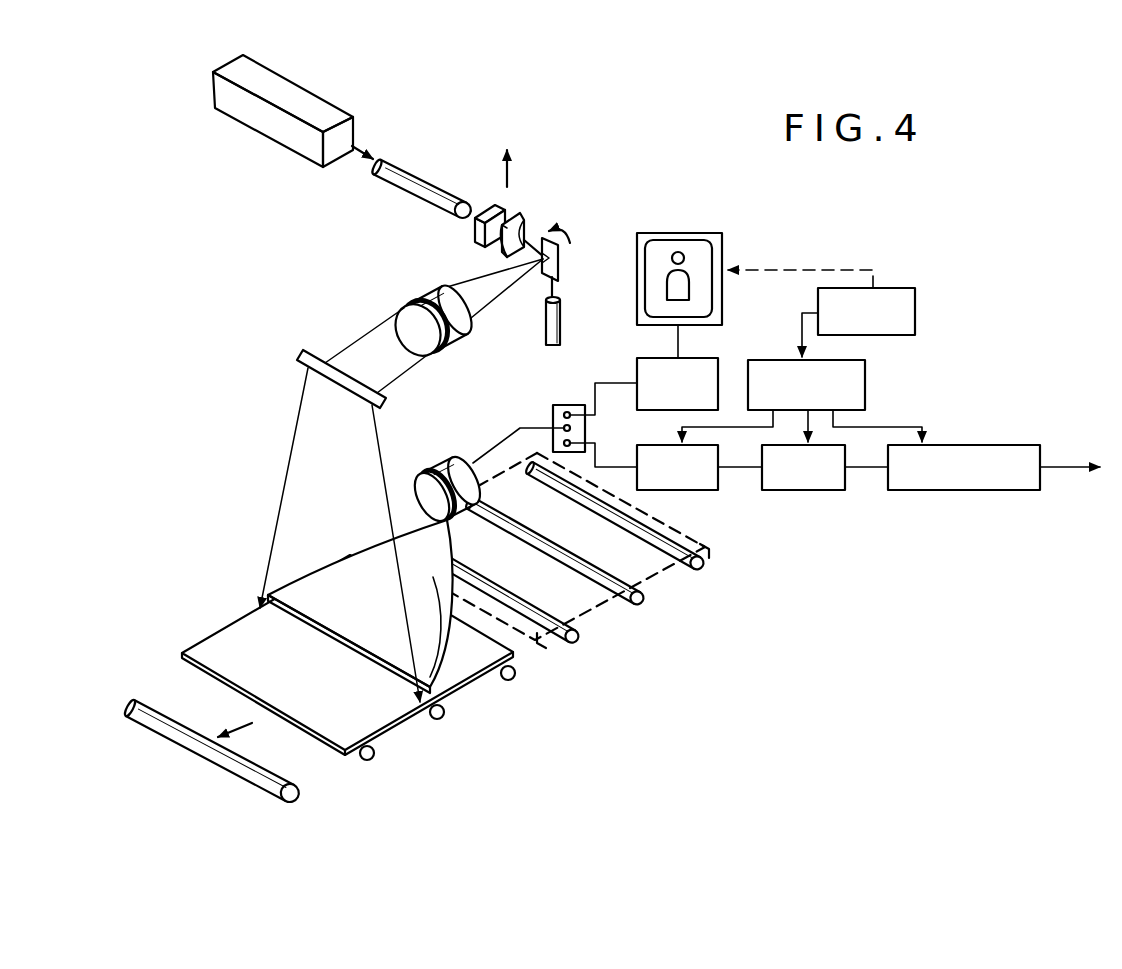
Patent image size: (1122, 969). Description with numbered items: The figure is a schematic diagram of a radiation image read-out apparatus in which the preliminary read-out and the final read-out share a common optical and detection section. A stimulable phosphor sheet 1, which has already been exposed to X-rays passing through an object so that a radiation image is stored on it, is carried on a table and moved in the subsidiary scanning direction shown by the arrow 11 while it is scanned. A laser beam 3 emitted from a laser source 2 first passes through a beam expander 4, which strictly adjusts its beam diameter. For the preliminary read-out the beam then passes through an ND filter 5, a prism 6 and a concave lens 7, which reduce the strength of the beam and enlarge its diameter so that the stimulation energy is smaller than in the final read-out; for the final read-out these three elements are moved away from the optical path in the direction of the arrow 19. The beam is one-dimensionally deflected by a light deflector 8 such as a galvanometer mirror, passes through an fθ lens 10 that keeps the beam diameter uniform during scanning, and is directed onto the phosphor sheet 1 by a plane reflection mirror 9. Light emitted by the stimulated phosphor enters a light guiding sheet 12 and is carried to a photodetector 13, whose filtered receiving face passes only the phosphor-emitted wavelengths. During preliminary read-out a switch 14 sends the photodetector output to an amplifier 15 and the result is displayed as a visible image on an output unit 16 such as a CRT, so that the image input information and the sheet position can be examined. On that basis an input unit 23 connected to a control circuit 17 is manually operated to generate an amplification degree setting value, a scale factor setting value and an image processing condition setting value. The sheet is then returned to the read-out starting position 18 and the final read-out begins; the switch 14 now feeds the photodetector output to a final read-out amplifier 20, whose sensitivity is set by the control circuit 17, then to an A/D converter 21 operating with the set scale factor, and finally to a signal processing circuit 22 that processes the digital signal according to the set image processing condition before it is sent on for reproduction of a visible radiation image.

The stimulable phosphor sheet 1 is at (463, 687).
The laser source 2 is at (320, 102).
The laser beam 3 is at (363, 148).
The beam expander 4 is at (435, 193).
The ND filter 5 is at (472, 242).
The prism 6 is at (507, 218).
The concave lens 7 is at (533, 229).
The light deflector 8 is at (563, 260).
The plane reflection mirror 9 is at (302, 360).
The fθ lens 10 is at (430, 295).
The arrow 11 is at (248, 725).
The light guiding sheet 12 is at (407, 520).
The photodetector 13 is at (450, 473).
The switch 14 is at (568, 403).
The amplifier 15 is at (713, 357).
The output unit 16 is at (710, 233).
The control circuit 17 is at (865, 383).
The read-out starting position 18 is at (665, 572).
The arrow 19 is at (510, 177).
The final read-out amplifier 20 is at (703, 493).
The A/D converter 21 is at (812, 493).
The signal processing circuit 22 is at (940, 493).
The input unit 23 is at (907, 288).